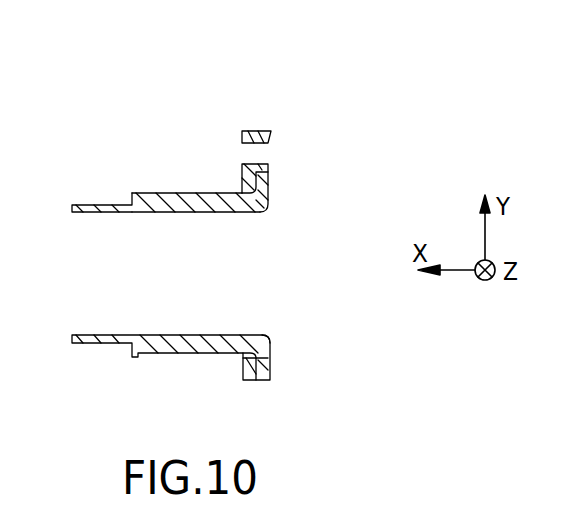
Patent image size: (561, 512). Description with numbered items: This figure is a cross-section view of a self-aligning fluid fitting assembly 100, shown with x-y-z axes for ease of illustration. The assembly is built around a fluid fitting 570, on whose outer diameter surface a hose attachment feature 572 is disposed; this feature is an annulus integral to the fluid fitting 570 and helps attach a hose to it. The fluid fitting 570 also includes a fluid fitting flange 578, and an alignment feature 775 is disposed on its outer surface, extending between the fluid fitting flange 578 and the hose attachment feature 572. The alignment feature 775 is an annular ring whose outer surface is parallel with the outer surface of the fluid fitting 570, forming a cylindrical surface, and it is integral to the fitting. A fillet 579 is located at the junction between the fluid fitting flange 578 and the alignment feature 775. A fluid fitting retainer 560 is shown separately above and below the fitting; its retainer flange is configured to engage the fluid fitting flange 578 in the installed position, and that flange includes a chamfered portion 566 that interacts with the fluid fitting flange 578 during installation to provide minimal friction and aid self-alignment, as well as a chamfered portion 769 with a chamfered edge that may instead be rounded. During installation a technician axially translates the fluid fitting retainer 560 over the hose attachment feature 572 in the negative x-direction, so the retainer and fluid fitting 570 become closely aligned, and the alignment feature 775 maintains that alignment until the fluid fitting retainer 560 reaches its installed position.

The electronic device 100 is at (189, 110).
The fluid fitting 570 is at (80, 205).
The hose attachment feature 572 is at (132, 193).
The fluid fitting flange 578 is at (262, 197).
The fluid fitting retainer 560 is at (271, 137).
The alignment feature 775 is at (197, 353).
The chamfered portion 566 is at (270, 378).
The chamfered portion 769 is at (247, 360).
The fillet 579 is at (263, 341).